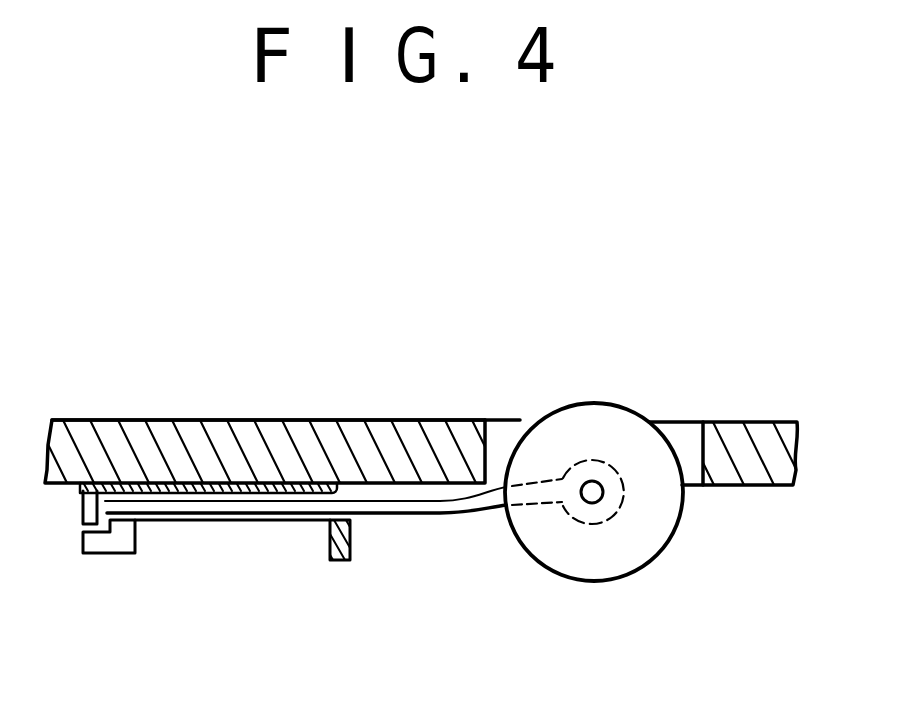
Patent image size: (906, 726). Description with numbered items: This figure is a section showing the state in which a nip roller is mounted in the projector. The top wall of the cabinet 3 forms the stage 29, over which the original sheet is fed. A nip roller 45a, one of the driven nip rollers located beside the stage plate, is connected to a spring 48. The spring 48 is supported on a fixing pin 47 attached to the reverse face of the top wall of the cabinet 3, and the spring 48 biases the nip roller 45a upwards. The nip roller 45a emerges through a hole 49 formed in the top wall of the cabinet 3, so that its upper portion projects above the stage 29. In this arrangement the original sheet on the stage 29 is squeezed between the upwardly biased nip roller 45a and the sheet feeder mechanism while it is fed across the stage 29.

The cabinet 3 is at (320, 412).
The stage 29 is at (173, 418).
The fixing pin 47 is at (137, 556).
The spring 48 is at (427, 515).
The nip roller 45a is at (650, 550).
The hole 49 is at (678, 435).